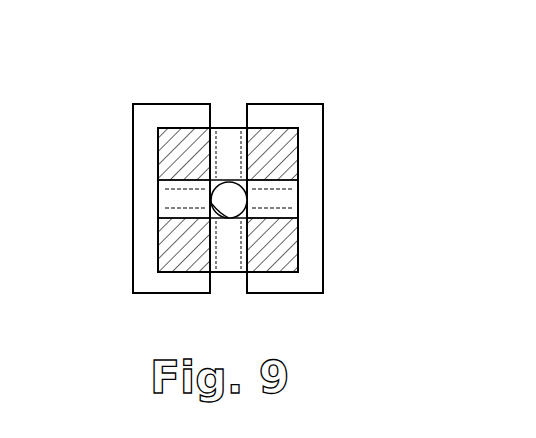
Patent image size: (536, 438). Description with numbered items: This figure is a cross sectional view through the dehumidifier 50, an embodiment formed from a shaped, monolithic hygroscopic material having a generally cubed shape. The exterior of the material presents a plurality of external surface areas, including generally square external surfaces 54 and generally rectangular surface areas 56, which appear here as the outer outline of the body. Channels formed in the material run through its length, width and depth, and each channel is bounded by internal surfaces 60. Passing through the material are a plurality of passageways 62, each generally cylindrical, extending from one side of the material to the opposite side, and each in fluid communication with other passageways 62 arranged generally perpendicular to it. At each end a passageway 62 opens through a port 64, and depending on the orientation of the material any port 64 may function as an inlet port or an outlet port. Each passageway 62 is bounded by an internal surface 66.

The dehumidifier 50 is at (231, 182).
The generally square external surfaces 54 is at (275, 293).
The generally rectangular surface areas 56 is at (325, 135).
The internal surfaces 60 is at (213, 118).
The passageways 62 is at (177, 160).
The port 64 is at (234, 132).
The internal surface 66 is at (242, 150).